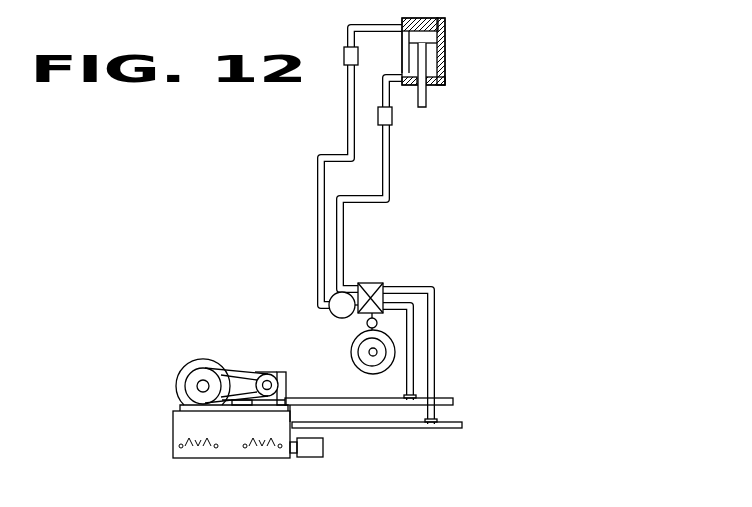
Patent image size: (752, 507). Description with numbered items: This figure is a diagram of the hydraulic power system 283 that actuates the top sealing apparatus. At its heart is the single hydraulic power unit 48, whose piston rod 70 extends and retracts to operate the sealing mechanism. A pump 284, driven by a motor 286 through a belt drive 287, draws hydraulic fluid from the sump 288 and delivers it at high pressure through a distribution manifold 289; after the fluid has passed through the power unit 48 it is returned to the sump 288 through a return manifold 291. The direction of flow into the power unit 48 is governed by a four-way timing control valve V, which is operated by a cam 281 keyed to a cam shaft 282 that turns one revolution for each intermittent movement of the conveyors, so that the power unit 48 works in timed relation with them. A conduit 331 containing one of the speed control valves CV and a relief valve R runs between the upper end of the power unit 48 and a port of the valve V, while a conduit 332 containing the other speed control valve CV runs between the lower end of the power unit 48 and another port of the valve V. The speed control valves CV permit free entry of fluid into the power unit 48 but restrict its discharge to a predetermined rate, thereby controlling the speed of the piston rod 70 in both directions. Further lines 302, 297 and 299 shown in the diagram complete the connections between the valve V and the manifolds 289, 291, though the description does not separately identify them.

The hydraulic power unit 48 is at (445, 43).
The piston rod 70 is at (427, 97).
The hydraulic power system 283 is at (534, 168).
The conduit 331 is at (347, 131).
The conduit 332 is at (391, 166).
The conduit 302 is at (436, 303).
The fitting 297 is at (378, 323).
The conduit 299 is at (416, 354).
The cam shaft 282 is at (353, 356).
The cam 281 is at (355, 339).
The pump 284 is at (275, 361).
The belt drive 287 is at (239, 372).
The motor 286 is at (182, 377).
The sump 288 is at (180, 424).
The distribution manifold 289 is at (357, 404).
The return manifold 291 is at (415, 428).
The speed control valve CV is at (379, 115).
The four-way timing control valve V is at (372, 283).
The relief valve R is at (330, 311).